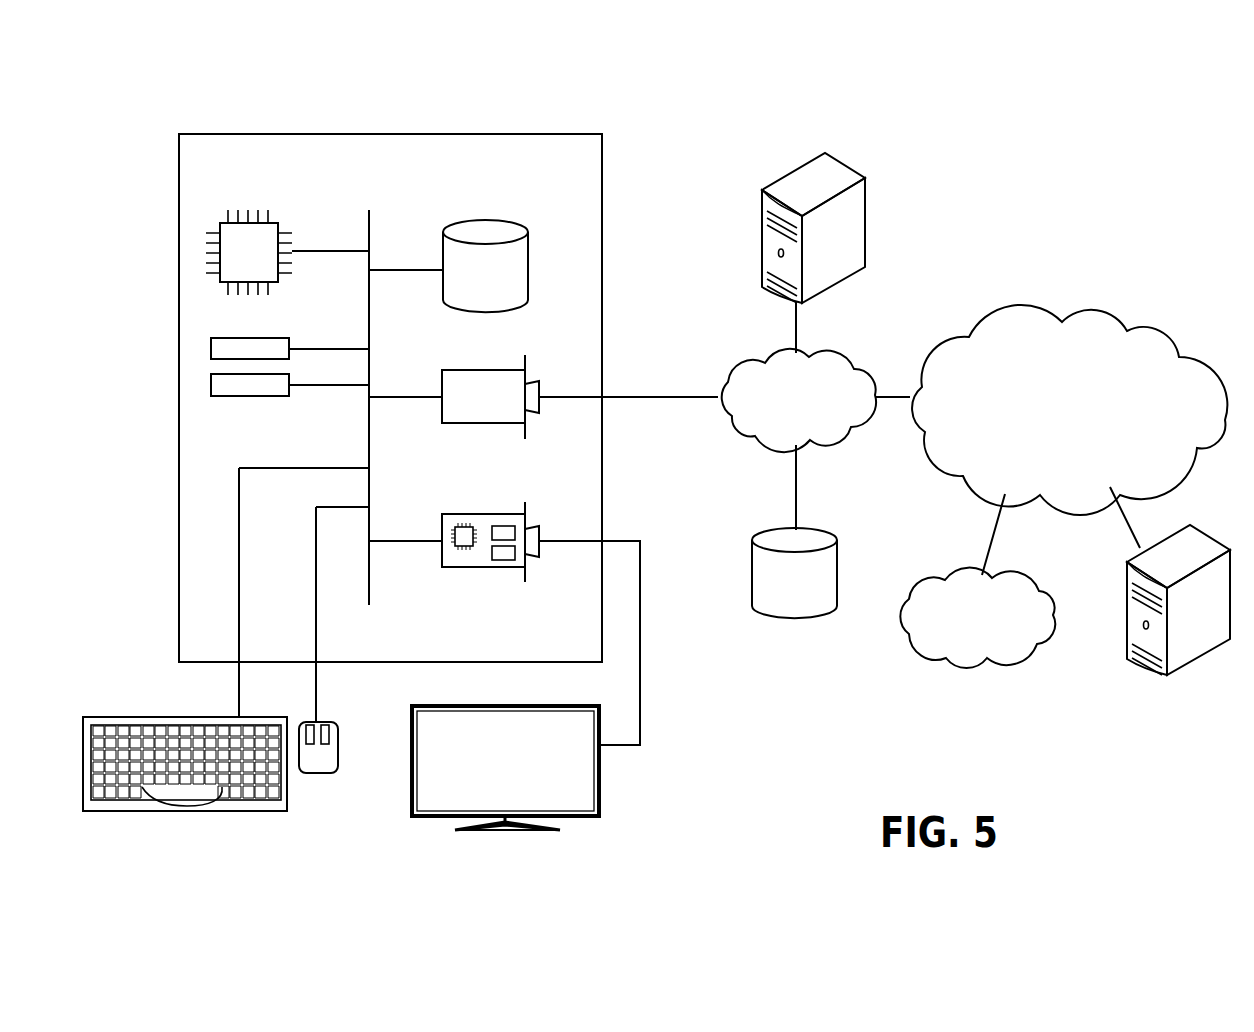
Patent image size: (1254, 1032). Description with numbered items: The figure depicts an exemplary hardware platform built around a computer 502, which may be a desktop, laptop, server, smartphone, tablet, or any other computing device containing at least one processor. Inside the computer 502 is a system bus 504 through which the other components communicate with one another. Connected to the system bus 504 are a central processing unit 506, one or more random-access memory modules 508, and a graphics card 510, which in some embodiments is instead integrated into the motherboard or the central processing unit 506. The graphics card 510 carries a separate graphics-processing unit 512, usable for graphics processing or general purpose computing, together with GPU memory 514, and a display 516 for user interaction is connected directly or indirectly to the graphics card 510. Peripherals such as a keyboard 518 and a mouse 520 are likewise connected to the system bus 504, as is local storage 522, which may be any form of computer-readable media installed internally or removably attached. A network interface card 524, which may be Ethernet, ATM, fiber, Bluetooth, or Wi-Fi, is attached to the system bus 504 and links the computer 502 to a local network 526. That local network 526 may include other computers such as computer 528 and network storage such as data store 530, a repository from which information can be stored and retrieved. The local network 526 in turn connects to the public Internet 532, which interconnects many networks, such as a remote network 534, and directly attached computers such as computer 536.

The computer 502 is at (556, 133).
The system bus 504 is at (370, 219).
The central processing unit (CPU) 506 is at (270, 216).
The random-access memory (RAM) modules 508 is at (290, 380).
The graphics card 510 is at (504, 608).
The graphics-processing unit (GPU) 512 is at (463, 548).
The GPU memory 514 is at (502, 561).
The display 516 is at (602, 797).
The keyboard 518 is at (188, 812).
The mouse 520 is at (316, 774).
The local storage 522 is at (529, 252).
The network interface card (NIC) 524 is at (441, 378).
The local network 526 is at (850, 357).
The computer 528 is at (850, 164).
The data store 530 is at (830, 530).
The public Internet 532 is at (1112, 320).
The remote network 534 is at (1032, 578).
The computer 536 is at (1207, 530).